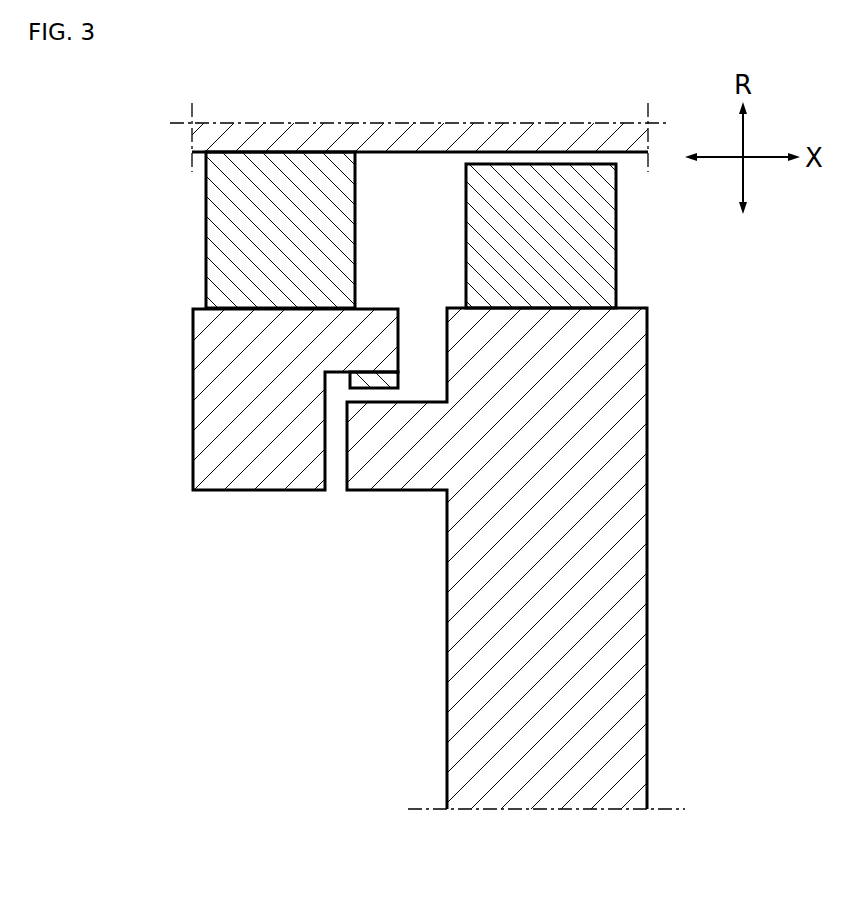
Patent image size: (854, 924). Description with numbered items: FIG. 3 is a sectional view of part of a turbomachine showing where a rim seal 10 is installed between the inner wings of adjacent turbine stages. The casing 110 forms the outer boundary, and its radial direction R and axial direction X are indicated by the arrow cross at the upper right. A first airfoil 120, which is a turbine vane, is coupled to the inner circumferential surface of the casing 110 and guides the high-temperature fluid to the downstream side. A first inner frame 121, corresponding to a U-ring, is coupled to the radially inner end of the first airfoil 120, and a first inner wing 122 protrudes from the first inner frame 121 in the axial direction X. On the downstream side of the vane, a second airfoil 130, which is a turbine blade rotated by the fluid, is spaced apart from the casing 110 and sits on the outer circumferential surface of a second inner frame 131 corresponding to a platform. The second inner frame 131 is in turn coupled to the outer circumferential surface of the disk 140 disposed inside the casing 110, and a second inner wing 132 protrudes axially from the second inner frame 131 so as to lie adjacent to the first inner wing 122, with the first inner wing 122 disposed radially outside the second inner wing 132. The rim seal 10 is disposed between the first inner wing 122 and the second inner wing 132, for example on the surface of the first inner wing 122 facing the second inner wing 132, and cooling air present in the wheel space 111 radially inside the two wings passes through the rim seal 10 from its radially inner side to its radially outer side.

The rim seal 10 is at (348, 385).
The casing 110 is at (460, 136).
The wheel space 111 is at (343, 696).
The first airfoil 120 is at (232, 240).
The first inner frame 121 is at (215, 350).
The first inner wing 122 is at (378, 325).
The second airfoil 130 is at (598, 240).
The second inner frame 131 is at (626, 352).
The second inner wing 132 is at (398, 463).
The disk 140 is at (627, 686).